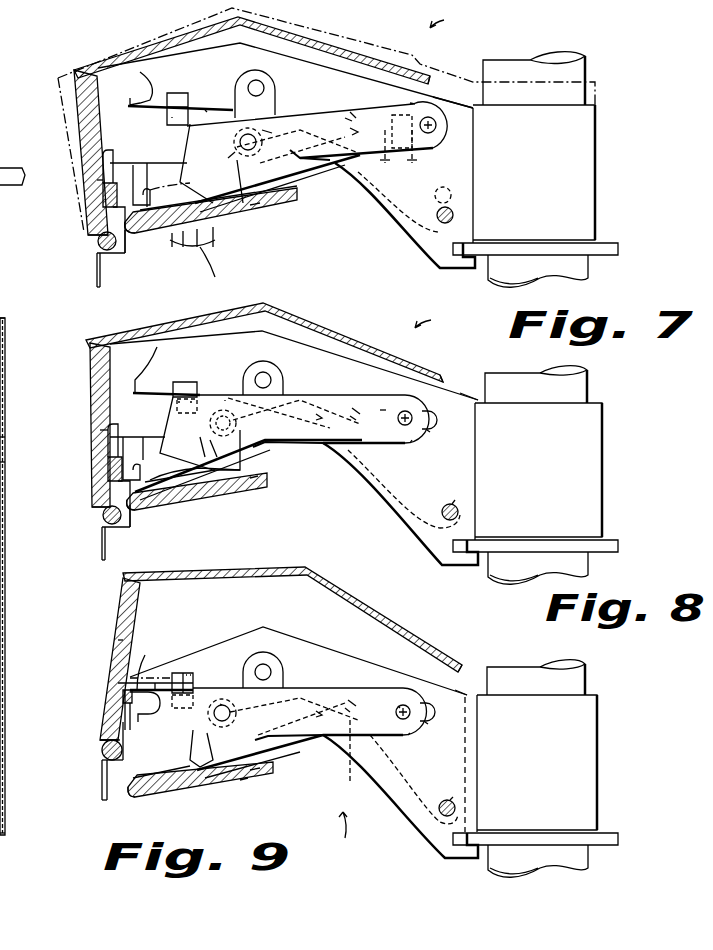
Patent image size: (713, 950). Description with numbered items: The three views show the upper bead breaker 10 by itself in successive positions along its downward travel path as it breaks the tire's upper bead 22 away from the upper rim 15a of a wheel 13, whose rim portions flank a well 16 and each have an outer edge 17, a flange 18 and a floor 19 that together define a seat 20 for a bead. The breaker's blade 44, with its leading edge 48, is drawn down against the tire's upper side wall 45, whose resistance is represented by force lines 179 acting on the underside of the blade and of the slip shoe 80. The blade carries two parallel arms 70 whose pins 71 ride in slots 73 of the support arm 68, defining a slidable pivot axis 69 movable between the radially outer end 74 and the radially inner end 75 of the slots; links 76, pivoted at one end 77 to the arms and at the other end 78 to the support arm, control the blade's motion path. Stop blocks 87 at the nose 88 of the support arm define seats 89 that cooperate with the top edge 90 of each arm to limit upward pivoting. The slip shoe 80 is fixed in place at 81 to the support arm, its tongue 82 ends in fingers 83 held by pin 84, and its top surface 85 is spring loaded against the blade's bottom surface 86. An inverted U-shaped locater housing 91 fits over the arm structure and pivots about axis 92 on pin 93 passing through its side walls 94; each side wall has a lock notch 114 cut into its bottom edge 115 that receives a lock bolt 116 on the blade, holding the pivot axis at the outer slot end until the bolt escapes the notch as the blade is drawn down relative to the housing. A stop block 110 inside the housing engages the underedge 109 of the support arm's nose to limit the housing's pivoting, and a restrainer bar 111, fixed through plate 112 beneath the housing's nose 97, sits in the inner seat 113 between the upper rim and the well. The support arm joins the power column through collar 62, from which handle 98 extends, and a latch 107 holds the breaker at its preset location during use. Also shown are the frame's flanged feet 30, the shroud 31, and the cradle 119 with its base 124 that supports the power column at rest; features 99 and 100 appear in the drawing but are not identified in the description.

In FIG. 7, the upper bead breaker 10 is at (445, 17).
In FIG. 8, the upper bead breaker 10 is at (431, 317).
In FIG. 9, the upper bead breaker 10 is at (342, 833).
In FIG. 7, the wheel 13 is at (97, 282).
In FIG. 8, the wheel 13 is at (102, 548).
In FIG. 9, the wheel 13 is at (100, 800).
In FIG. 7, the upper rim 15a is at (103, 200).
In FIG. 8, the upper rim 15a is at (107, 470).
In FIG. 9, the upper rim 15a is at (122, 708).
In FIG. 7, the well 16 is at (112, 275).
In FIG. 8, the well 16 is at (115, 535).
In FIG. 9, the well 16 is at (112, 795).
In FIG. 7, the outer edge 17 is at (147, 165).
In FIG. 8, the outer edge 17 is at (148, 437).
In FIG. 9, the outer edge 17 is at (118, 683).
In FIG. 7, the flange 18 is at (133, 186).
In FIG. 8, the flange 18 is at (140, 461).
In FIG. 9, the flange 18 is at (125, 697).
In FIG. 7, the floor 19 is at (97, 241).
In FIG. 8, the floor 19 is at (102, 515).
In FIG. 9, the floor 19 is at (103, 745).
In FIG. 7, the seat 20 is at (98, 213).
In FIG. 8, the seat 20 is at (105, 487).
In FIG. 9, the seat 20 is at (118, 722).
In FIG. 7, the upper bead 22 is at (137, 230).
In FIG. 8, the upper bead 22 is at (140, 505).
In FIG. 9, the upper bead 22 is at (137, 795).
In FIG. 9, the flanged feet 30 is at (10, 851).
In FIG. 8, the shroud 31 is at (5, 333).
In FIG. 7, the blade 44 is at (222, 218).
In FIG. 8, the blade 44 is at (222, 493).
In FIG. 9, the blade 44 is at (205, 785).
In FIG. 7, the upper side wall 45 is at (258, 212).
In FIG. 8, the upper side wall 45 is at (258, 485).
In FIG. 9, the upper side wall 45 is at (258, 775).
In FIG. 7, the leading edge 48 is at (152, 189).
In FIG. 8, the leading edge 48 is at (156, 471).
In FIG. 9, the leading edge 48 is at (137, 778).
In FIG. 7, the collar 62 is at (590, 168).
In FIG. 8, the collar 62 is at (595, 441).
In FIG. 9, the collar 62 is at (590, 762).
In FIG. 7, the support arm 68 is at (313, 55).
In FIG. 8, the support arm 68 is at (348, 360).
In FIG. 9, the support arm 68 is at (330, 662).
In FIG. 7, the slidable pivot axis 69 is at (437, 126).
In FIG. 8, the slidable pivot axis 69 is at (404, 410).
In FIG. 9, the slidable pivot axis 69 is at (402, 705).
In FIG. 7, the arms 70 is at (334, 116).
In FIG. 8, the arms 70 is at (316, 398).
In FIG. 9, the arms 70 is at (320, 697).
In FIG. 7, the pin 71 is at (447, 140).
In FIG. 8, the pin 71 is at (410, 444).
In FIG. 9, the pin 71 is at (410, 736).
In FIG. 7, the slot 73 is at (413, 169).
In FIG. 8, the slot 73 is at (428, 432).
In FIG. 9, the slot 73 is at (428, 723).
In FIG. 7, the radially outer end 74 is at (437, 121).
In FIG. 8, the radially outer end 74 is at (440, 422).
In FIG. 9, the radially outer end 74 is at (437, 714).
In FIG. 7, the radially inner end 75 is at (385, 169).
In FIG. 8, the radially inner end 75 is at (378, 423).
In FIG. 9, the radially inner end 75 is at (398, 704).
In FIG. 7, the links 76 is at (277, 99).
In FIG. 8, the links 76 is at (245, 385).
In FIG. 9, the links 76 is at (244, 678).
In FIG. 7, the pivotal connection 77 is at (272, 133).
In FIG. 8, the pivotal connection 77 is at (226, 412).
In FIG. 9, the pivotal connection 77 is at (220, 705).
In FIG. 7, the pivotal connection 78 is at (264, 84).
In FIG. 8, the pivotal connection 78 is at (269, 376).
In FIG. 9, the pivotal connection 78 is at (265, 664).
In FIG. 7, the slip shoe 80 is at (305, 190).
In FIG. 8, the slip shoe 80 is at (289, 464).
In FIG. 9, the slip shoe 80 is at (293, 754).
In FIG. 7, the fixing point 81 is at (362, 107).
In FIG. 8, the fixing point 81 is at (350, 422).
In FIG. 9, the fixing point 81 is at (345, 693).
In FIG. 7, the tongue 82 is at (290, 198).
In FIG. 8, the tongue 82 is at (270, 455).
In FIG. 9, the tongue 82 is at (275, 760).
In FIG. 7, the fingers 83 is at (356, 131).
In FIG. 8, the fingers 83 is at (318, 417).
In FIG. 9, the fingers 83 is at (318, 714).
In FIG. 7, the pin 84 is at (350, 112).
In FIG. 8, the pin 84 is at (350, 425).
In FIG. 9, the pin 84 is at (350, 682).
In FIG. 7, the top surface 85 is at (298, 156).
In FIG. 8, the top surface 85 is at (270, 447).
In FIG. 9, the top surface 85 is at (272, 740).
In FIG. 7, the bottom surface 86 is at (245, 215).
In FIG. 8, the bottom surface 86 is at (248, 490).
In FIG. 9, the bottom surface 86 is at (240, 780).
In FIG. 7, the stop blocks 87 is at (178, 94).
In FIG. 8, the stop blocks 87 is at (183, 382).
In FIG. 9, the stop blocks 87 is at (178, 673).
In FIG. 7, the nose 88 is at (141, 108).
In FIG. 8, the nose 88 is at (140, 392).
In FIG. 9, the nose 88 is at (145, 655).
In FIG. 7, the seat 89 is at (170, 120).
In FIG. 8, the seat 89 is at (178, 402).
In FIG. 9, the seat 89 is at (186, 672).
In FIG. 7, the top edge 90 is at (206, 116).
In FIG. 9, the top edge 90 is at (190, 672).
In FIG. 7, the locater housing 91 is at (298, 58).
In FIG. 8, the locater housing 91 is at (295, 312).
In FIG. 9, the locater housing 91 is at (345, 594).
In FIG. 7, the pivot axis 92 is at (455, 217).
In FIG. 8, the pivot axis 92 is at (460, 511).
In FIG. 9, the pivot axis 92 is at (458, 806).
In FIG. 7, the pin 93 is at (450, 210).
In FIG. 8, the pin 93 is at (455, 505).
In FIG. 9, the pin 93 is at (455, 802).
In FIG. 7, the side walls 94 is at (395, 228).
In FIG. 8, the side walls 94 is at (397, 510).
In FIG. 9, the side walls 94 is at (368, 724).
In FIG. 7, the nose 97 is at (80, 124).
In FIG. 8, the nose 97 is at (90, 358).
In FIG. 9, the nose 97 is at (118, 602).
In FIG. 7, the handle 98 is at (10, 168).
In FIG. 7, the lid edge 99 is at (432, 78).
In FIG. 8, the lid edge 99 is at (445, 380).
In FIG. 9, the lid edge 99 is at (467, 667).
In FIG. 7, the lid corner 100 is at (441, 98).
In FIG. 8, the lid corner 100 is at (465, 390).
In FIG. 9, the lid corner 100 is at (470, 690).
In FIG. 7, the latch 107 is at (620, 249).
In FIG. 8, the latch 107 is at (620, 546).
In FIG. 9, the latch 107 is at (620, 836).
In FIG. 7, the underedge 109 is at (138, 75).
In FIG. 8, the underedge 109 is at (160, 356).
In FIG. 9, the underedge 109 is at (152, 677).
In FIG. 7, the stop block 110 is at (101, 156).
In FIG. 8, the stop block 110 is at (106, 440).
In FIG. 9, the stop block 110 is at (163, 712).
In FIG. 7, the restrainer bar 111 is at (125, 255).
In FIG. 8, the restrainer bar 111 is at (128, 533).
In FIG. 9, the restrainer bar 111 is at (105, 748).
In FIG. 7, the plate 112 is at (92, 178).
In FIG. 8, the plate 112 is at (95, 432).
In FIG. 9, the plate 112 is at (118, 640).
In FIG. 9, the inner seat 113 is at (105, 758).
In FIG. 7, the lock notch 114 is at (235, 141).
In FIG. 8, the lock notch 114 is at (262, 402).
In FIG. 9, the lock notch 114 is at (262, 682).
In FIG. 7, the bottom edge 115 is at (190, 145).
In FIG. 8, the bottom edge 115 is at (110, 413).
In FIG. 9, the bottom edge 115 is at (362, 759).
In FIG. 7, the lock bolt 116 is at (228, 160).
In FIG. 8, the lock bolt 116 is at (208, 432).
In FIG. 9, the lock bolt 116 is at (205, 728).
In FIG. 8, the cradle 119 is at (5, 462).
In FIG. 8, the base 124 is at (6, 437).
In FIG. 7, the force lines 179 is at (203, 265).